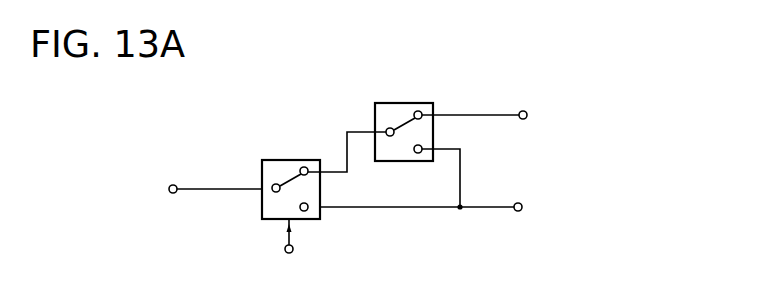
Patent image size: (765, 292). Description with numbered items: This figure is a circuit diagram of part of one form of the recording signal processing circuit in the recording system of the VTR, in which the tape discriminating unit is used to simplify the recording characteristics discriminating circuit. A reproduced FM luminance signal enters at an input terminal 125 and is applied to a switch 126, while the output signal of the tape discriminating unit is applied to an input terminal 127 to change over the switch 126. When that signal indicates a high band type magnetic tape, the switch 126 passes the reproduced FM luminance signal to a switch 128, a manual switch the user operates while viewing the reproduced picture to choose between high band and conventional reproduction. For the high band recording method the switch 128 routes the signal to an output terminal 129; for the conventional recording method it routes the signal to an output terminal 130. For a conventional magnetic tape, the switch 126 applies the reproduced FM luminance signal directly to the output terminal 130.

The input terminal 125 is at (176, 194).
The switch 126 is at (290, 160).
The input terminal 127 is at (294, 248).
The switch 128 is at (410, 103).
The output terminal 129 is at (524, 110).
The output terminal 130 is at (522, 204).